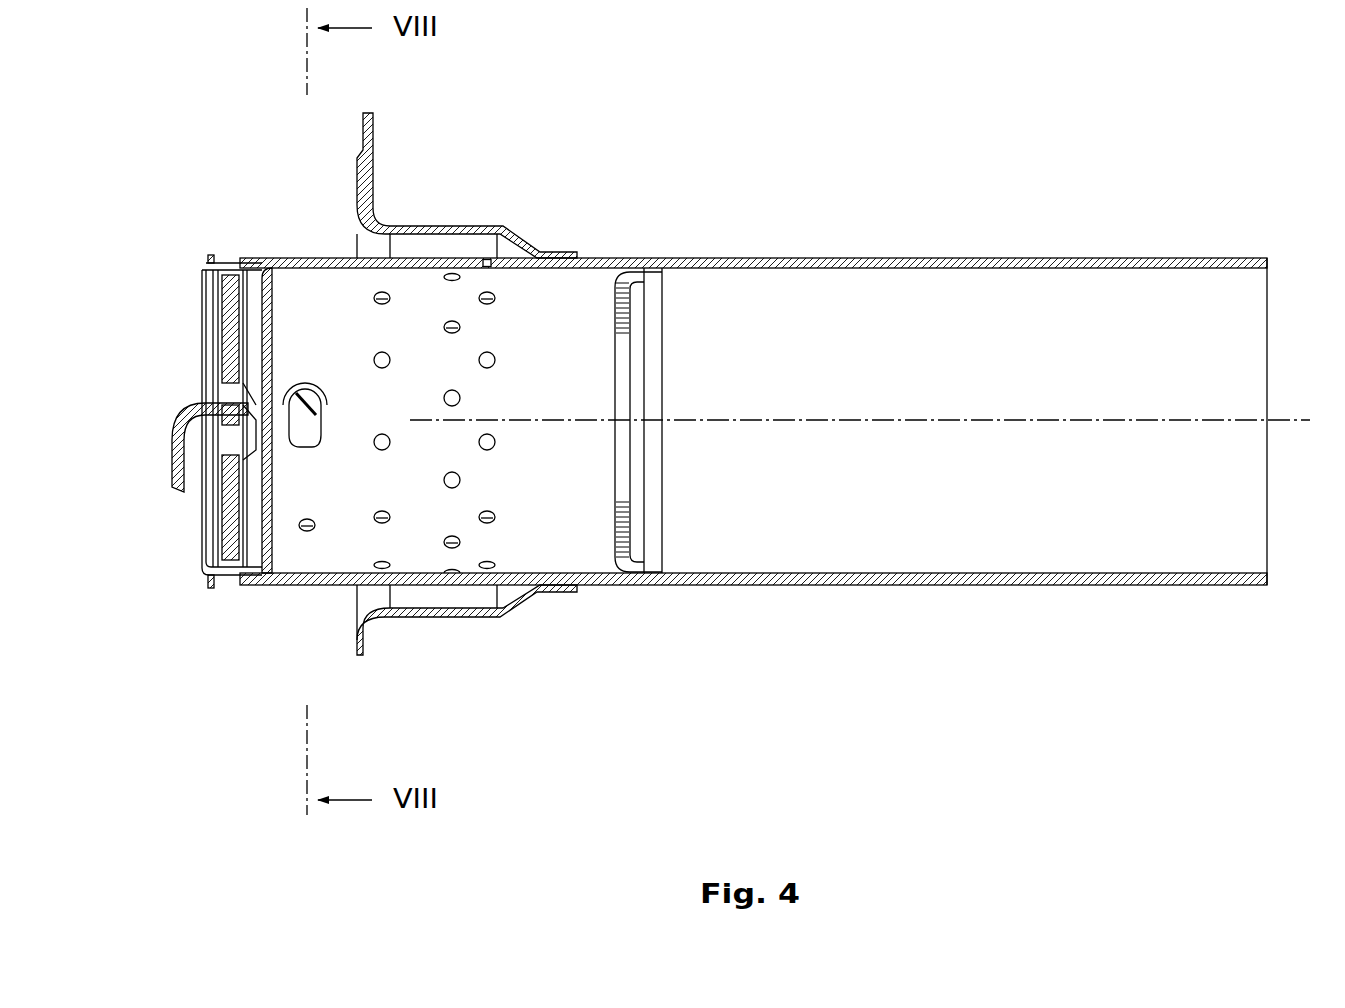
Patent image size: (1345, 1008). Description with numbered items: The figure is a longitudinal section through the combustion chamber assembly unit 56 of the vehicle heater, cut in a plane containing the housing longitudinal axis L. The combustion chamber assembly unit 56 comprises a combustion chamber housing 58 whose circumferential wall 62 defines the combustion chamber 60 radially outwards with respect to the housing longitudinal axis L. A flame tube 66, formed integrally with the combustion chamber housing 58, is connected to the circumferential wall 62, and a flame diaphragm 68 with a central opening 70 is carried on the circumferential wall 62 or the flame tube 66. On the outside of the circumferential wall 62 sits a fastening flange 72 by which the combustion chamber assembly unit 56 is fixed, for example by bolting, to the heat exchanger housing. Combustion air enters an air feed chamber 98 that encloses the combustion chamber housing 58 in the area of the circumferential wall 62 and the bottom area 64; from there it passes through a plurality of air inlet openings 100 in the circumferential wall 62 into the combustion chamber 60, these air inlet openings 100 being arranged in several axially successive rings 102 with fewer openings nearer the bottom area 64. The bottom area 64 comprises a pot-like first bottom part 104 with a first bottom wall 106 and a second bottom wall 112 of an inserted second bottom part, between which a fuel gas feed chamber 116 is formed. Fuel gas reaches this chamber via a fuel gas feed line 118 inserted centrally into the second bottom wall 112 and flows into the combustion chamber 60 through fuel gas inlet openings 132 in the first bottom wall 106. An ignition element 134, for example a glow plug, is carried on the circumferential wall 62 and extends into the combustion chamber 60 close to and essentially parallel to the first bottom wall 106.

The combustion chamber assembly unit 56 is at (645, 162).
The combustion chamber housing 58 is at (459, 252).
The combustion chamber 60 is at (567, 298).
The circumferential wall 62 is at (418, 587).
The bottom area 64 is at (168, 574).
The flame tube 66 is at (1060, 258).
The flame diaphragm 68 is at (628, 298).
The opening 70 is at (625, 480).
The fastening flange 72 is at (383, 222).
The air feed chamber 98 is at (322, 228).
The air inlet openings 100 is at (377, 518).
The rings 102 is at (486, 606).
The first bottom part 104 is at (255, 556).
The first bottom wall 106 is at (268, 499).
The second bottom wall 112 is at (233, 338).
The fuel gas feed chamber 116 is at (250, 297).
The fuel gas feed line 118 is at (178, 443).
The fuel gas inlet openings 132 is at (268, 463).
The ignition element 134 is at (305, 432).
The housing longitudinal axis L is at (1307, 420).